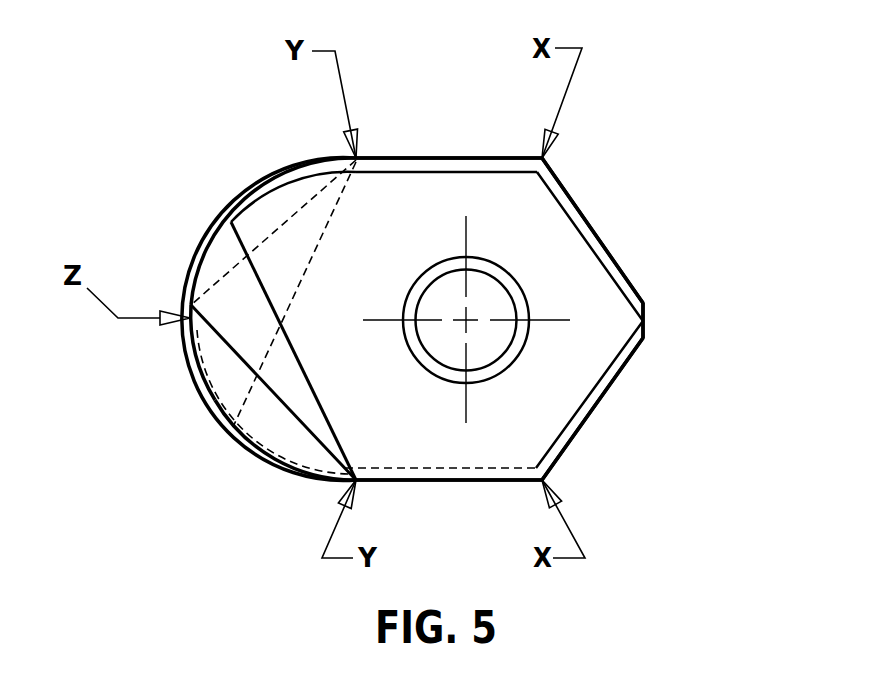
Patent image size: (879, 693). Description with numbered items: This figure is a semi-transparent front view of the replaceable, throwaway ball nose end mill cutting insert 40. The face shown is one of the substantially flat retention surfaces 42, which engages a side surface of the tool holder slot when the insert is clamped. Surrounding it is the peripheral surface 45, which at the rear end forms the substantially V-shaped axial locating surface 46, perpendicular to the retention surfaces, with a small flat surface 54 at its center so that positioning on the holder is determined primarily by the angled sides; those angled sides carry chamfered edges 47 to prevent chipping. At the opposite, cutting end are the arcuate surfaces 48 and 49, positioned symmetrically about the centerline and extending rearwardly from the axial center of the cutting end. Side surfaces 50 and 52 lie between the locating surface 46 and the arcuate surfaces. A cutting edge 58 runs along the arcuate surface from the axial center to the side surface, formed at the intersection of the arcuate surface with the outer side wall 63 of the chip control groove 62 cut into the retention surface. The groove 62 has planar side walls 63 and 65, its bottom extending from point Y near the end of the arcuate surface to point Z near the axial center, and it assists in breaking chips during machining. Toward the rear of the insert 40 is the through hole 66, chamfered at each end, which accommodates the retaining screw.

The cutting tool insert 40 is at (667, 82).
The retention surface 42 is at (488, 190).
The peripheral surface 45 is at (395, 482).
The V-shaped axial locating surface 46 is at (618, 263).
The chamfered edges 47 is at (567, 202).
The arcuate surface 48 is at (245, 440).
The arcuate surface 49 is at (200, 260).
The side surface 50 is at (415, 158).
The side surface 52 is at (480, 482).
The flat surface 54 is at (643, 321).
The cutting edge 58 is at (197, 367).
The chip control groove 62 is at (302, 427).
The outer side wall 63 is at (230, 373).
The side wall 65 is at (230, 258).
The through hole 66 is at (448, 297).